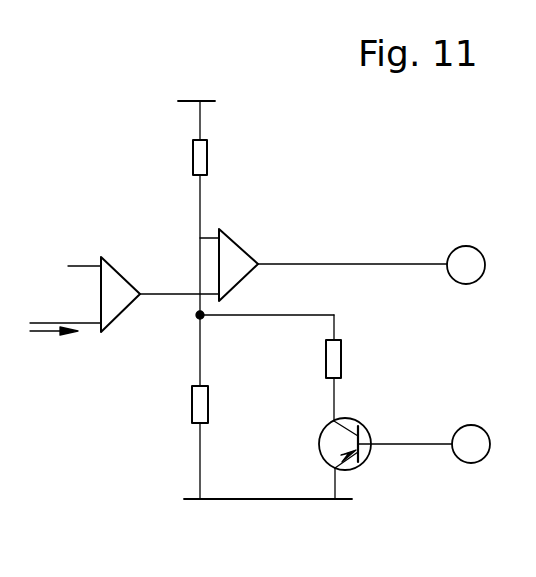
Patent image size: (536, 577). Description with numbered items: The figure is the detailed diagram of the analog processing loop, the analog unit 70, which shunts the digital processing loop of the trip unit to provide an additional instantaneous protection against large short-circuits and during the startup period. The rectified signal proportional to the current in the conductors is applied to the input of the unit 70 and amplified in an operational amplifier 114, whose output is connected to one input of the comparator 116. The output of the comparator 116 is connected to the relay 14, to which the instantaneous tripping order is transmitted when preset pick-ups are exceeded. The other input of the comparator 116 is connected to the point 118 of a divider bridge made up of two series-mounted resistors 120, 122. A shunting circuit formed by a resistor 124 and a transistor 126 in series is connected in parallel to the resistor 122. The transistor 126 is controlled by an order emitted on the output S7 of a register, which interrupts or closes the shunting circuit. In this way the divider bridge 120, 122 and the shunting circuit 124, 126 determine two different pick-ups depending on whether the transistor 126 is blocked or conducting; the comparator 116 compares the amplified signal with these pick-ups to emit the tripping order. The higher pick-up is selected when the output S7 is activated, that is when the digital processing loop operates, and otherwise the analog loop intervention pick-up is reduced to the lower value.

The analog unit 70 is at (128, 458).
The operational amplifier 114 is at (118, 268).
The comparator 116 is at (232, 240).
The point of divider bridge 118 is at (198, 318).
The resistor 120 is at (207, 160).
The resistor 122 is at (210, 403).
The resistor 124 is at (341, 360).
The transistor 126 is at (365, 428).
The relay 14 is at (466, 265).
The output of register S7 is at (471, 444).